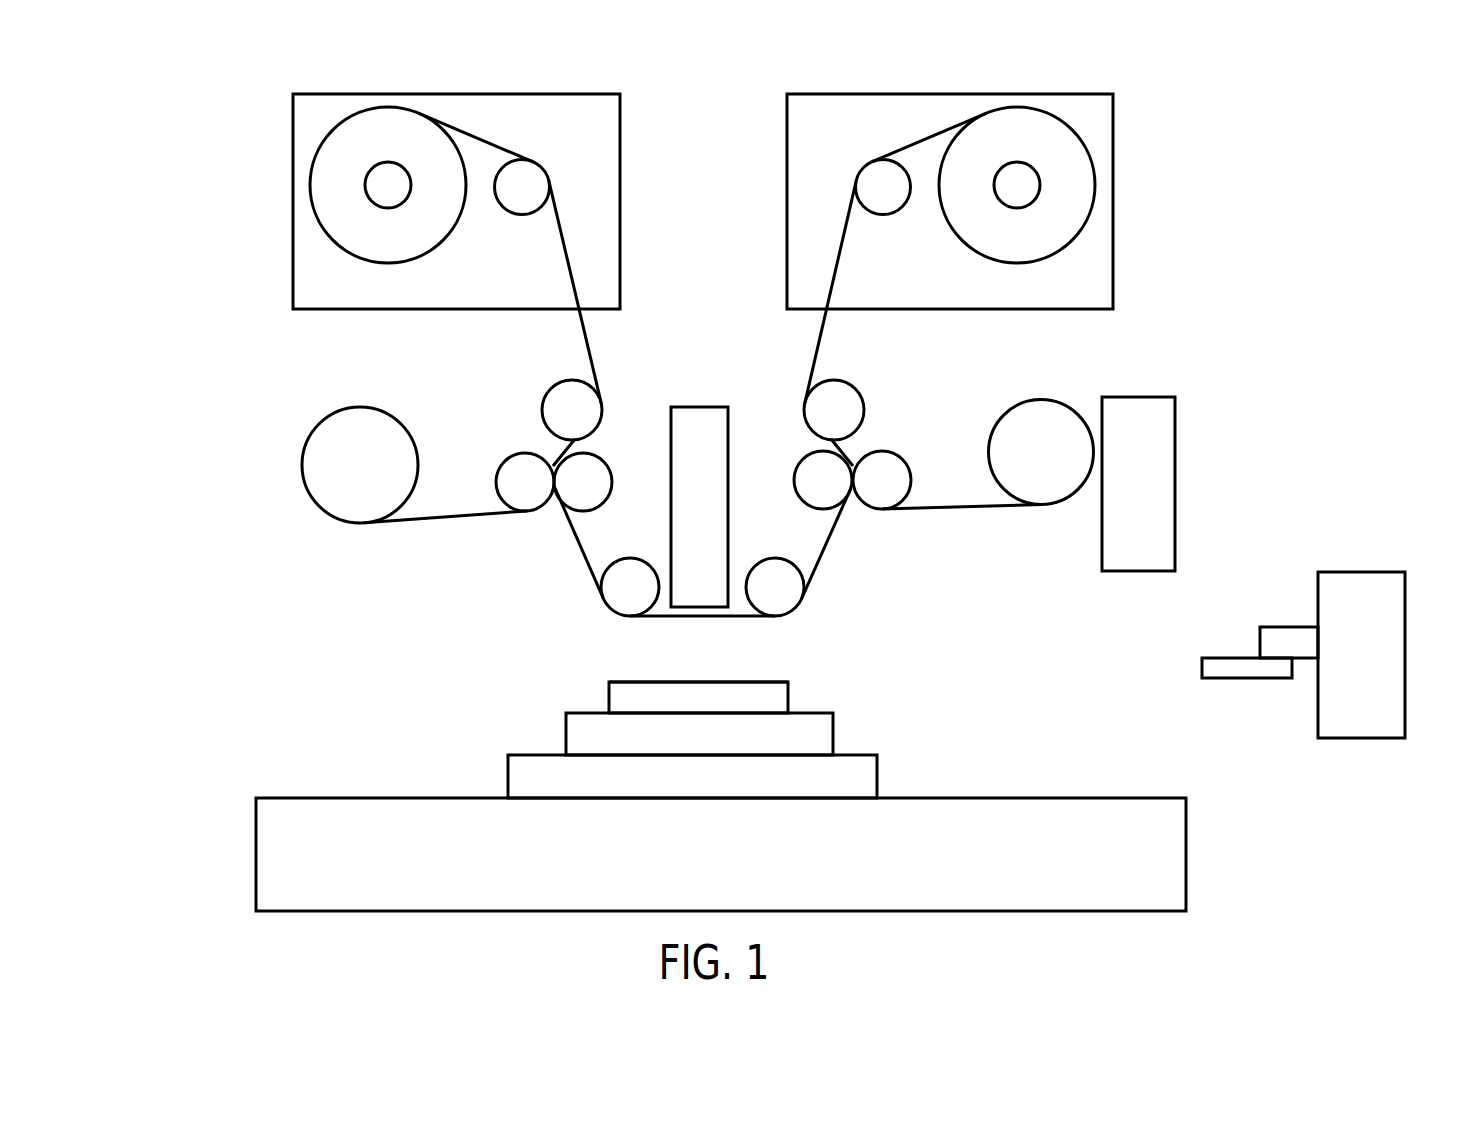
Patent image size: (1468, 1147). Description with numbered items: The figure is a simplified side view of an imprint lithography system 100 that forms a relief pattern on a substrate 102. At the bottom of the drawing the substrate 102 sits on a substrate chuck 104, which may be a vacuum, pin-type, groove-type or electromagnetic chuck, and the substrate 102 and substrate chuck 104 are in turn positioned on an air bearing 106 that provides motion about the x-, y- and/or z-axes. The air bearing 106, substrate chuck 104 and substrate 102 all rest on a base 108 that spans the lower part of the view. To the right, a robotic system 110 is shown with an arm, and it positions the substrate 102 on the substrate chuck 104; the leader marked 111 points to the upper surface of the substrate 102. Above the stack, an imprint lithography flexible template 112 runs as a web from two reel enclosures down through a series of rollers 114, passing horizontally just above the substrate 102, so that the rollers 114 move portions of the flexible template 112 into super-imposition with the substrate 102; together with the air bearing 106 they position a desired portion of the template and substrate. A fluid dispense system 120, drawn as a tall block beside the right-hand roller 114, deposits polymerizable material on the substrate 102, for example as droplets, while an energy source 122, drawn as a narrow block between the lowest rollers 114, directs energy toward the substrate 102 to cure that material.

The imprint lithography system 100 is at (178, 120).
The substrate 102 is at (596, 695).
The substrate chuck 104 is at (554, 736).
The air bearing 106 is at (496, 776).
The base 108 is at (243, 846).
The robotic system 110 is at (1350, 560).
The substrate top surface 111 is at (628, 672).
The flexible template 112 is at (750, 630).
The rollers 114 is at (288, 466).
The fluid dispense system 120 is at (1188, 407).
The energy source 122 is at (693, 393).